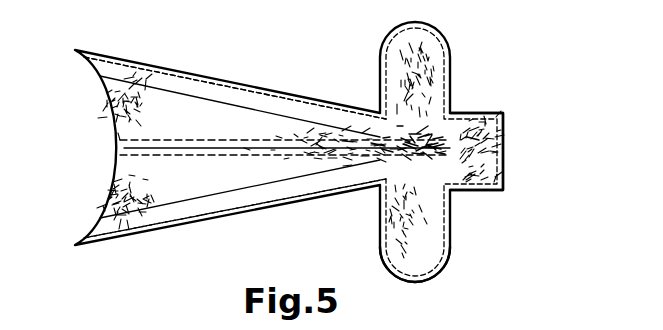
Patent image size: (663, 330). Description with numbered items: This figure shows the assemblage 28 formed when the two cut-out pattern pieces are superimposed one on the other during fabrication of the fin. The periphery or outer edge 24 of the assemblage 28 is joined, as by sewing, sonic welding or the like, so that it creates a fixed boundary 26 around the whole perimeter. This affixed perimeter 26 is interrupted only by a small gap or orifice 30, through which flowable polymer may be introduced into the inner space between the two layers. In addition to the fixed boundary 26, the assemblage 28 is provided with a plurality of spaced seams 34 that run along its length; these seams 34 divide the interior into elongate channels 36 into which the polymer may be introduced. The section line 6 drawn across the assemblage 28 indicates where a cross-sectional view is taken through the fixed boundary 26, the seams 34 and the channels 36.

The section line 6- 6 is at (224, 50).
The periphery or outer edge 24 is at (470, 112).
The fixed boundary 26 is at (272, 88).
The assemblage 28 is at (455, 268).
The gap or orifice 30 is at (503, 152).
The spaced seams 34 is at (115, 110).
The elongate channels 36 is at (147, 70).